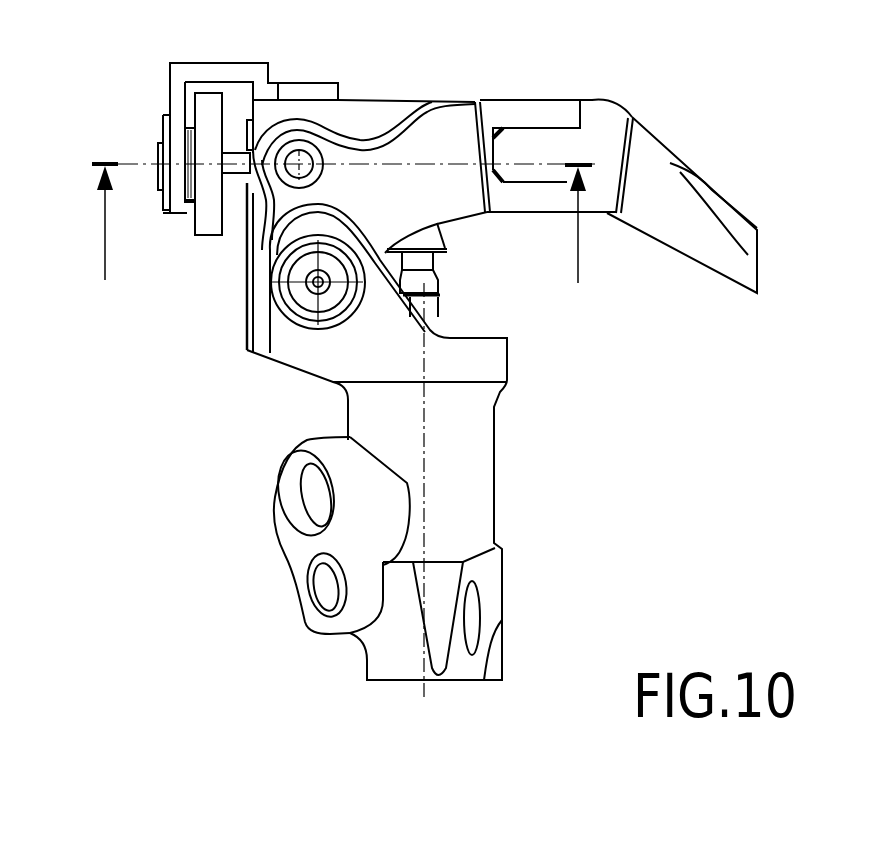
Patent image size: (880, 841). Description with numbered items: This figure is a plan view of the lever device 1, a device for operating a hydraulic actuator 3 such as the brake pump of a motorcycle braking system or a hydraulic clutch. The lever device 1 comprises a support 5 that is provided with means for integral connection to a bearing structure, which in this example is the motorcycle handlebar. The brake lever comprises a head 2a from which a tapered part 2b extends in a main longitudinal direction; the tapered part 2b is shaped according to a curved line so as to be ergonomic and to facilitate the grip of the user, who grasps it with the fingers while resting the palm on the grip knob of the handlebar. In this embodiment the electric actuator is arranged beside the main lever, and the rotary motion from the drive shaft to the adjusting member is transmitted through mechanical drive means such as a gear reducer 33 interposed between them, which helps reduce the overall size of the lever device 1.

The lever device 1 is at (399, 351).
The head 2a is at (513, 112).
The tapered part 2b is at (653, 177).
The hydraulic actuator 3 is at (472, 468).
The support 5 is at (300, 347).
The gear reducer 33 is at (207, 217).